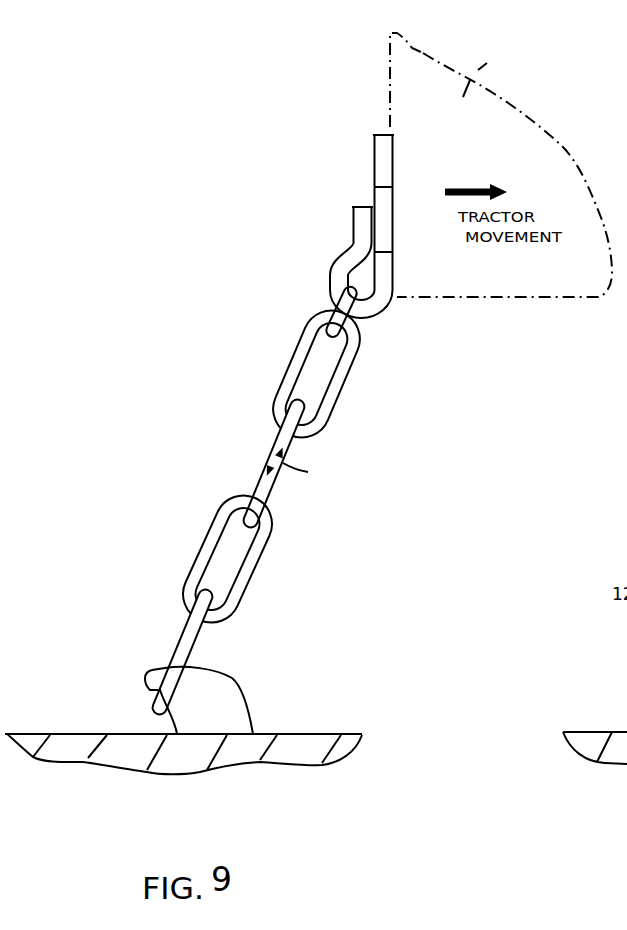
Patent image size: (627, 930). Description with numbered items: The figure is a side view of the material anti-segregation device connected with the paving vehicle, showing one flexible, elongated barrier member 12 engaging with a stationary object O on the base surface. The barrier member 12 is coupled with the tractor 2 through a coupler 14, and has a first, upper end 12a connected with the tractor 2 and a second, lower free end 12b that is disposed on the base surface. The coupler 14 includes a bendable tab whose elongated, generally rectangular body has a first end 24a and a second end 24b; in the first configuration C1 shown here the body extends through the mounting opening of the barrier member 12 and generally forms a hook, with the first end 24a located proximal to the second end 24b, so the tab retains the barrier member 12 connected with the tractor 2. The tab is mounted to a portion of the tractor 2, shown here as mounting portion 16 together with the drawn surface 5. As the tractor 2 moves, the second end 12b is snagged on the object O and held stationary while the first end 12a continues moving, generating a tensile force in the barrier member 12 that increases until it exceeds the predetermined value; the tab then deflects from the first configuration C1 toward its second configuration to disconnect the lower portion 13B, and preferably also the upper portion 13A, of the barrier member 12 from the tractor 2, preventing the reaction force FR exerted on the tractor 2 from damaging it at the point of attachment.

The tractor 2 is at (498, 47).
The hitch bracket 16 is at (404, 222).
The coupler 14 is at (353, 222).
The first end of tab body 24a is at (363, 206).
The second end of tab body 24b is at (386, 257).
The first configuration C1 is at (362, 223).
The reaction force FR is at (333, 308).
The barrier member 12 is at (251, 501).
The first upper end of barrier member 12a is at (355, 321).
The upper portion of barrier member 13A is at (357, 353).
The lower portion of barrier member 13B is at (212, 536).
The second lower free end of barrier member 12b is at (183, 635).
The stationary object O is at (250, 681).
The ground 5 is at (333, 733).